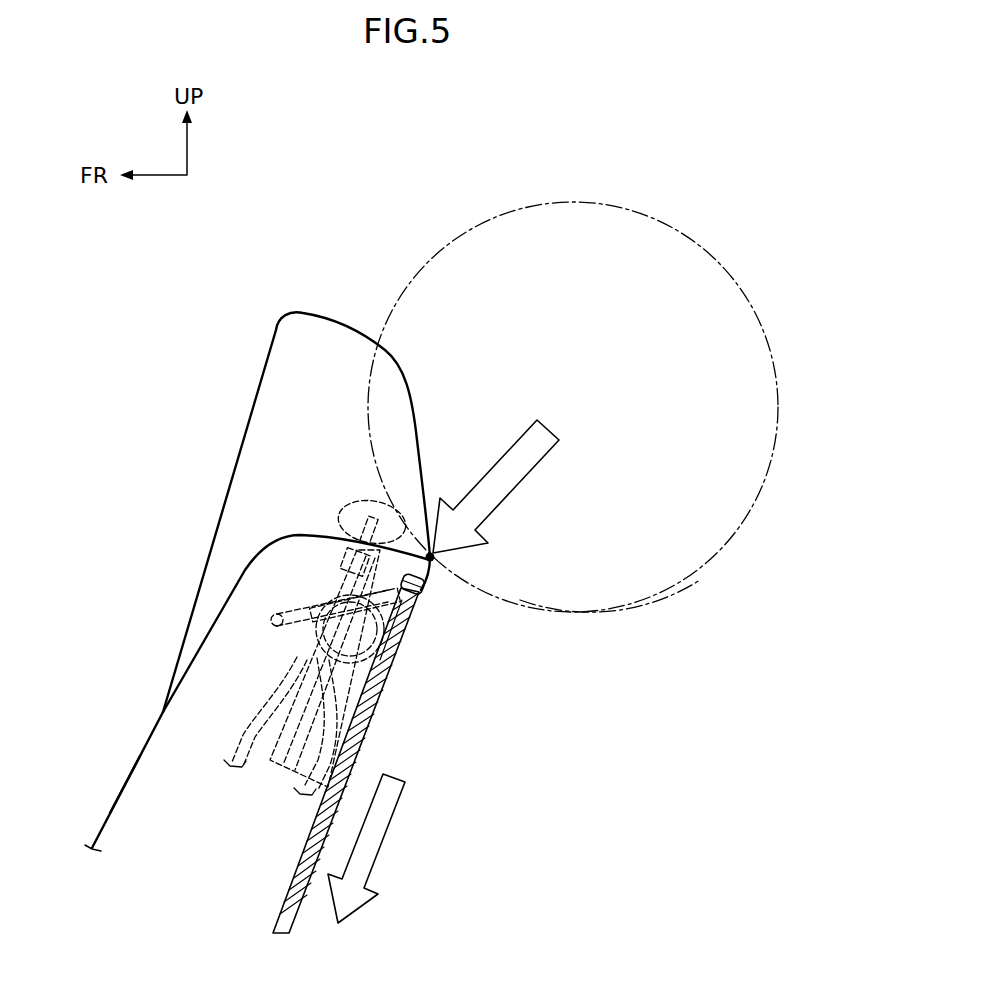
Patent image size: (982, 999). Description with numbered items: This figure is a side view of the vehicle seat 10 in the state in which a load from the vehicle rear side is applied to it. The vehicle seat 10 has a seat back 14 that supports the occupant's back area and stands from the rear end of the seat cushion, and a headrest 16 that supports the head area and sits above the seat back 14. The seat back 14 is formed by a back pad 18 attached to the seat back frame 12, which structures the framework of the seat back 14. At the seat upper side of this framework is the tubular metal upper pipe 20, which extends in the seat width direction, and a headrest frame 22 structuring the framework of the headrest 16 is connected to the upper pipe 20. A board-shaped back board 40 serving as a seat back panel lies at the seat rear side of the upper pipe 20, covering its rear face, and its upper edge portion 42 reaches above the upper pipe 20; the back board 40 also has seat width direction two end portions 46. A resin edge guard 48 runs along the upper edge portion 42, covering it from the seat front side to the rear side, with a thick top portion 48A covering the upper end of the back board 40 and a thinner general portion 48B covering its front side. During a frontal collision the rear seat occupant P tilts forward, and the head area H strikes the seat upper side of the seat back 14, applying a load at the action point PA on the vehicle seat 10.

The vehicle seat 10 is at (337, 195).
The seat back frame 12 is at (280, 682).
The seat back 14 is at (143, 779).
The headrest 16 is at (277, 399).
The back pad 18 is at (123, 824).
The upper pipe 20 is at (290, 762).
The headrest frame 22 is at (347, 515).
The back board 40 is at (362, 756).
The upper edge portion 42 is at (404, 634).
The seat width direction two end portions 46 is at (369, 724).
The edge guard 48 is at (384, 629).
The top portion 48A is at (422, 593).
The general portion 48B is at (340, 628).
The seat occupant P is at (720, 262).
The action point PA is at (437, 557).
The head area H is at (650, 600).